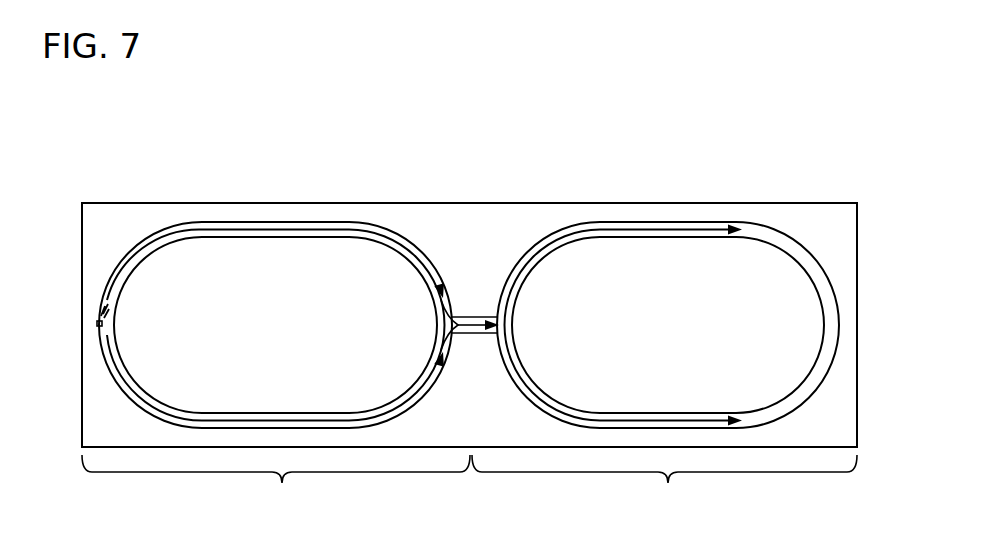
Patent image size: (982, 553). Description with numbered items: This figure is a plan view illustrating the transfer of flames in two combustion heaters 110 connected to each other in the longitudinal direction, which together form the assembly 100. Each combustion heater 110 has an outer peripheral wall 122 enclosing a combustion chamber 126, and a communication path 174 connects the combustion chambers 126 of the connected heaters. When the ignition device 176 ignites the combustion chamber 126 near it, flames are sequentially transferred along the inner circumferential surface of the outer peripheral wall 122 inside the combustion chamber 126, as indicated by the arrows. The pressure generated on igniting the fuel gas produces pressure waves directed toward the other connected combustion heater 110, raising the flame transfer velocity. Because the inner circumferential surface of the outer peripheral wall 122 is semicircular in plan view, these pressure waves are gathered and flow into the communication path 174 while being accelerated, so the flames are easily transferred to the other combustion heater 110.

The optical device 100 is at (483, 120).
The combustion heater 110 is at (469, 482).
The outer peripheral wall 122 is at (450, 256).
The combustion chamber 126 is at (332, 222).
The communication path 174 is at (480, 317).
The ignition device 176 is at (98, 326).